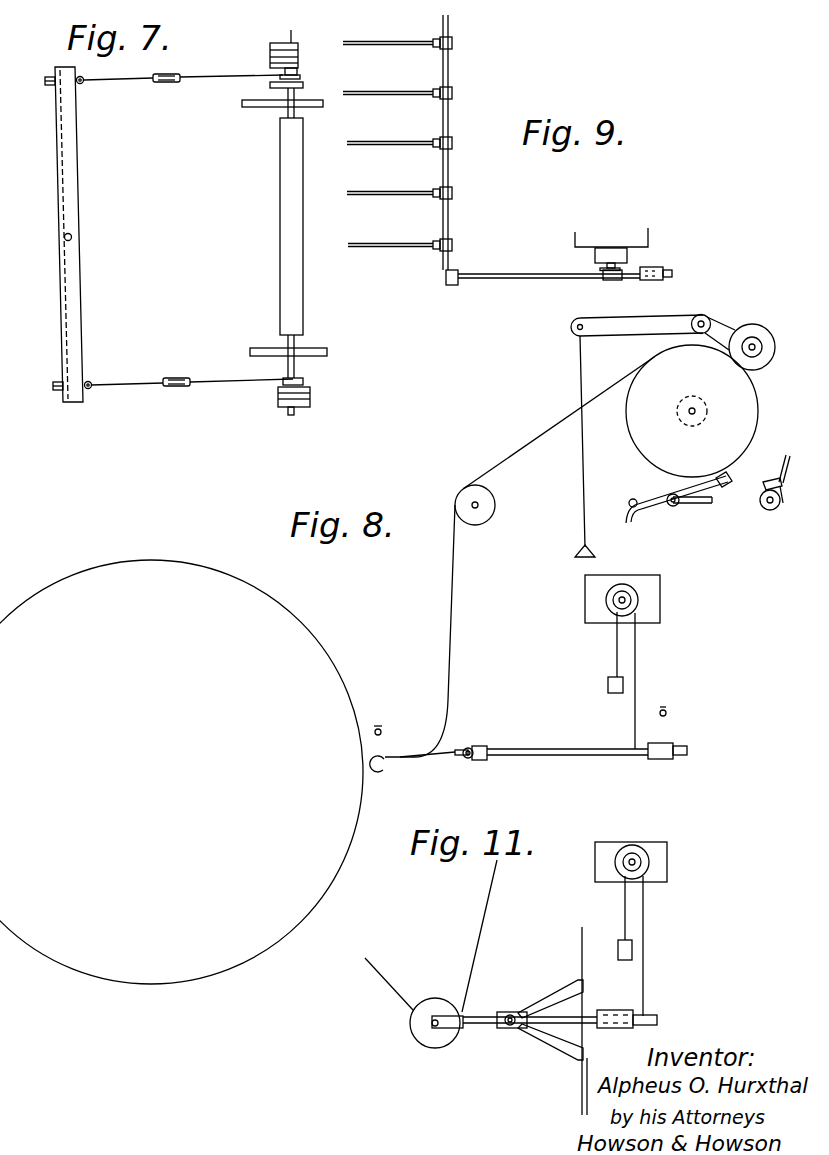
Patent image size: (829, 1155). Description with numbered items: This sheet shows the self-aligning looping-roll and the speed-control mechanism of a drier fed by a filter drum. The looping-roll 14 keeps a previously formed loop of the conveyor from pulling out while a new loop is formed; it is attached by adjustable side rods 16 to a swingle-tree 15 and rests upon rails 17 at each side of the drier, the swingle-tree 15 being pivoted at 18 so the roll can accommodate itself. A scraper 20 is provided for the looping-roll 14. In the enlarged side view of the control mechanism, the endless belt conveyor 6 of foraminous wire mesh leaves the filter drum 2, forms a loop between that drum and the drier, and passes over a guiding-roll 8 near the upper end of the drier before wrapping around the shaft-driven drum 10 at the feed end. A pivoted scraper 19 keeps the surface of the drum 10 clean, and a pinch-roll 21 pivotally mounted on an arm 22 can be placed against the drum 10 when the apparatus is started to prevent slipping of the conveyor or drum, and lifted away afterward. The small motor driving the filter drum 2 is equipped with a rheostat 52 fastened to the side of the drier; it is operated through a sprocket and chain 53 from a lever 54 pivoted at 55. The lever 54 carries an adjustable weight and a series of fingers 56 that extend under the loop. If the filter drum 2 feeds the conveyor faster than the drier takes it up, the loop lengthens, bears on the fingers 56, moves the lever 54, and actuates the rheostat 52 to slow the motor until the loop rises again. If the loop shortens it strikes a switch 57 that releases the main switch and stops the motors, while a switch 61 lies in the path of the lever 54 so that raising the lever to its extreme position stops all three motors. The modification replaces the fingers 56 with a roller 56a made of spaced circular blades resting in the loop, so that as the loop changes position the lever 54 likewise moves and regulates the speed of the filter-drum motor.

In FIG. 8, the drum 2 is at (181, 772).
In FIG. 8, the endless belt conveyor 6 is at (503, 455).
In FIG. 11, the endless belt conveyor 6 is at (431, 936).
In FIG. 8, the guiding-roll 8 is at (475, 526).
In FIG. 8, the drum 10 is at (692, 411).
In FIG. 7, the looping-roll 14 is at (300, 305).
In FIG. 8, the looping-roll 14 is at (769, 508).
In FIG. 7, the swingle-tree 15 is at (76, 181).
In FIG. 7, the adjustable side rods 16 is at (145, 72).
In FIG. 7, the rails 17 is at (318, 108).
In FIG. 7, the pivot 18 is at (72, 240).
In FIG. 8, the pivoted scraper 19 is at (715, 493).
In FIG. 8, the scraper 20 is at (771, 479).
In FIG. 8, the pinch-roll 21 is at (763, 333).
In FIG. 8, the arm 22 is at (653, 427).
In FIG. 9, the rheostat 52 is at (657, 246).
In FIG. 8, the rheostat 52 is at (622, 587).
In FIG. 11, the rheostat 52 is at (645, 862).
In FIG. 9, the sprocket and chain 53 is at (652, 278).
In FIG. 8, the sprocket and chain 53 is at (640, 673).
In FIG. 11, the sprocket and chain 53 is at (633, 952).
In FIG. 9, the lever 54 is at (586, 279).
In FIG. 8, the lever 54 is at (567, 765).
In FIG. 11, the lever 54 is at (585, 1025).
In FIG. 9, the pivot 55 is at (455, 262).
In FIG. 8, the pivot 55 is at (472, 746).
In FIG. 11, the pivot 55 is at (509, 1029).
In FIG. 9, the fingers 56 is at (397, 142).
In FIG. 8, the fingers 56 is at (422, 762).
In FIG. 11, the roller 56a is at (436, 1011).
In FIG. 8, the switch 57 is at (375, 726).
In FIG. 8, the switch 61 is at (671, 712).